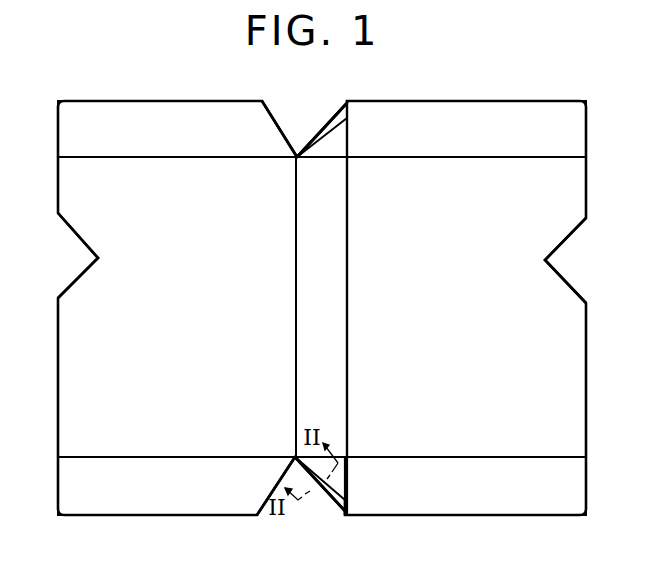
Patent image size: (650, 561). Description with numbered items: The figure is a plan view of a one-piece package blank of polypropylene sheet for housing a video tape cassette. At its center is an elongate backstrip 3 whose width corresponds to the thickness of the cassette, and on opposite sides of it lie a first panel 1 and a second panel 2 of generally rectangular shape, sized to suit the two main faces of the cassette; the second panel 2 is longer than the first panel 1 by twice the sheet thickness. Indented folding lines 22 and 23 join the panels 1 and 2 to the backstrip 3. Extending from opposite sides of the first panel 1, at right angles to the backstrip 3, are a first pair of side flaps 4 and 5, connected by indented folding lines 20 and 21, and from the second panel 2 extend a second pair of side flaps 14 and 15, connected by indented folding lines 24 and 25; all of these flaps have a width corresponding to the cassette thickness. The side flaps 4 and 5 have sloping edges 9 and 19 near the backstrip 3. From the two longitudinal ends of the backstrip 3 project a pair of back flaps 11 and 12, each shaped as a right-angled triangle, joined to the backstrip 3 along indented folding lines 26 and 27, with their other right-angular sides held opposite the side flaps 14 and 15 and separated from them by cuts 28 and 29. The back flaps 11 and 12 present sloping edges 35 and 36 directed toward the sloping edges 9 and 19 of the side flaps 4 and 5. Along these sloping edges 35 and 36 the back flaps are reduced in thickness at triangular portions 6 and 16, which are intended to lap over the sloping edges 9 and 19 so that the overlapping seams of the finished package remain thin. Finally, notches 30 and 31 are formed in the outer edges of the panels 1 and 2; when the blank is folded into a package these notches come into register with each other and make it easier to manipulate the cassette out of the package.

The first panel 1 is at (168, 307).
The second panel 2 is at (452, 309).
The backstrip 3 is at (312, 306).
The side flap 4 is at (151, 138).
The side flap 5 is at (126, 493).
The triangular portion 6 is at (334, 120).
The sloping edge 9 is at (280, 105).
The back flap 11 is at (321, 142).
The back flap 12 is at (332, 480).
The side flap 14 is at (472, 143).
The side flap 15 is at (483, 497).
The triangular portion 16 is at (337, 498).
The sloping edge 19 is at (287, 472).
The indented folding line 20 is at (224, 158).
The indented folding line 21 is at (205, 456).
The indented folding line 22 is at (295, 357).
The indented folding line 23 is at (349, 355).
The indented folding line 24 is at (445, 159).
The indented folding line 25 is at (474, 457).
The indented folding line 26 is at (328, 160).
The indented folding line 27 is at (340, 457).
The cut 28 is at (352, 142).
The cut 29 is at (349, 478).
The notch 30 is at (85, 270).
The notch 31 is at (568, 242).
The sloping edge 35 is at (338, 111).
The sloping edge 36 is at (330, 498).